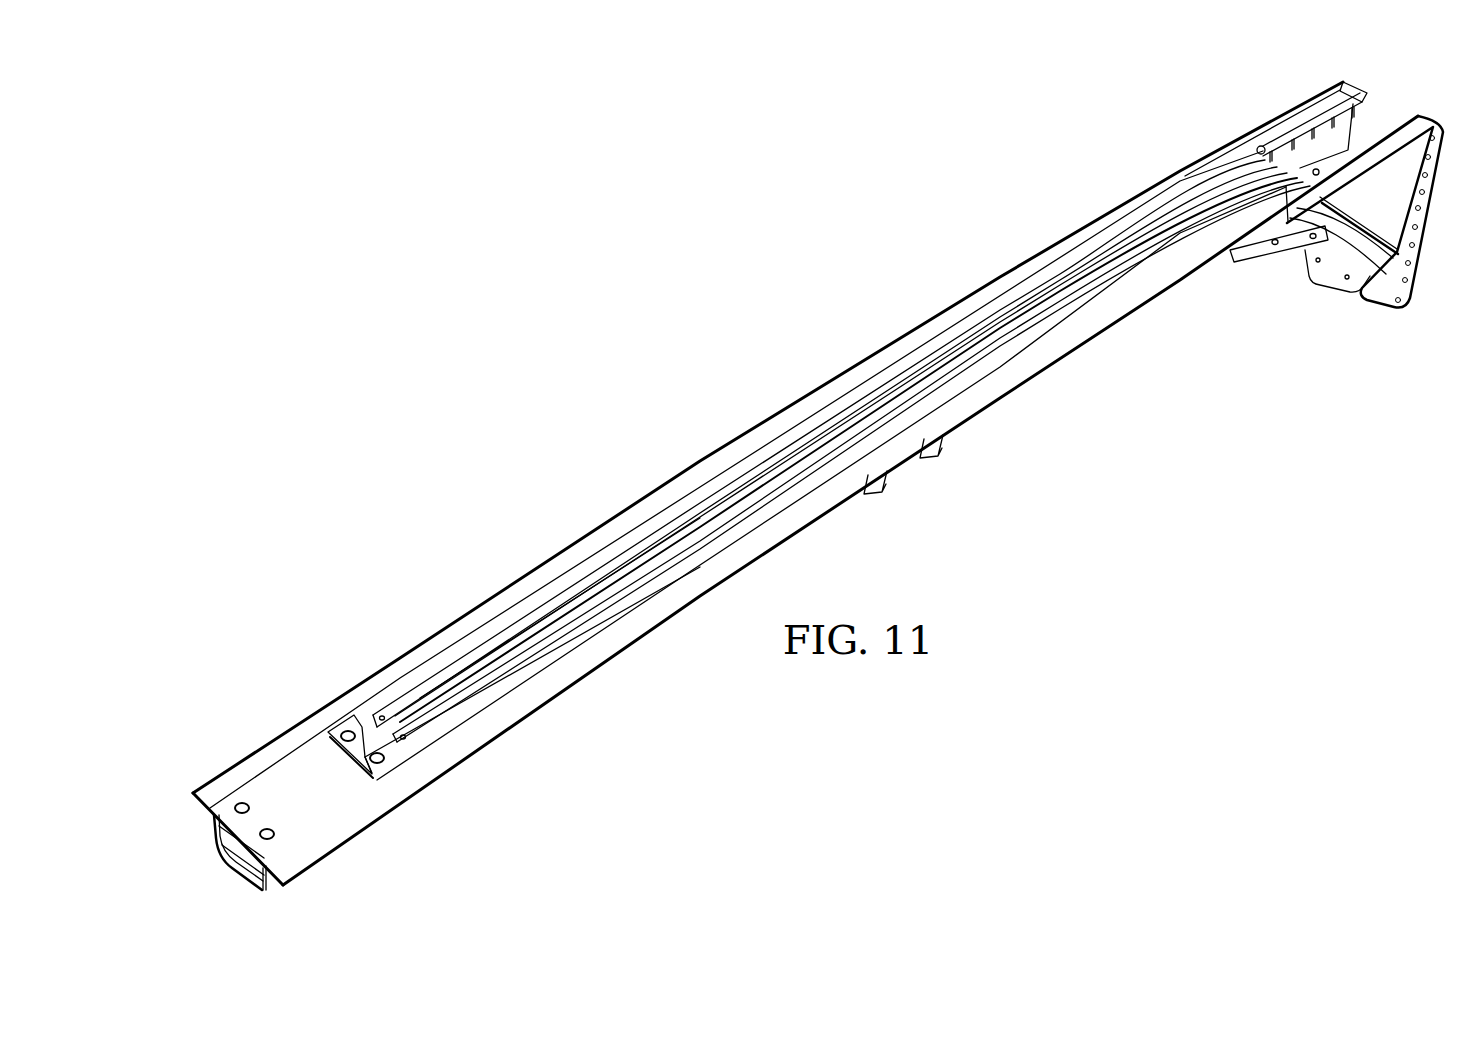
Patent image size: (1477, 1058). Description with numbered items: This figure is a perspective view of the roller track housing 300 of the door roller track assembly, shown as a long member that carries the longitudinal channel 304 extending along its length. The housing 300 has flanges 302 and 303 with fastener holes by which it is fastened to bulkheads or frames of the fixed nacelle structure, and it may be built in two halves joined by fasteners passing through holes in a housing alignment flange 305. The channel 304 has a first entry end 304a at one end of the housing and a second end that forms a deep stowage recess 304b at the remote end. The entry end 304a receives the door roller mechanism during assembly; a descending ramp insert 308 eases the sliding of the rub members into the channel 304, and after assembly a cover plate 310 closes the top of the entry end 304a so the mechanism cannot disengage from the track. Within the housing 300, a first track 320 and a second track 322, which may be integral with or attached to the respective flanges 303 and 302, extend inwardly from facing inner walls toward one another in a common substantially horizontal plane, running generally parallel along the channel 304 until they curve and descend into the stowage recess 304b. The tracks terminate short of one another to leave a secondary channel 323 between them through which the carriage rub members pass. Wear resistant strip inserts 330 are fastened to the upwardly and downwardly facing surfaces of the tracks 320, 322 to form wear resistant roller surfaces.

The housing 300 is at (578, 336).
The housing flange 302 is at (988, 404).
The housing flange 303 is at (866, 363).
The longitudinal channel 304 is at (697, 529).
The entry end 304a is at (223, 860).
The deep stowage recess 304b is at (1385, 108).
The housing alignment flange 305 is at (1268, 248).
The descending ramp insert 308 is at (366, 748).
The cover plate 310 is at (274, 779).
The first track 320 is at (495, 620).
The second track 322 is at (538, 666).
The secondary channel 323 is at (1032, 316).
The wear resistant strip insert 330 is at (1132, 228).